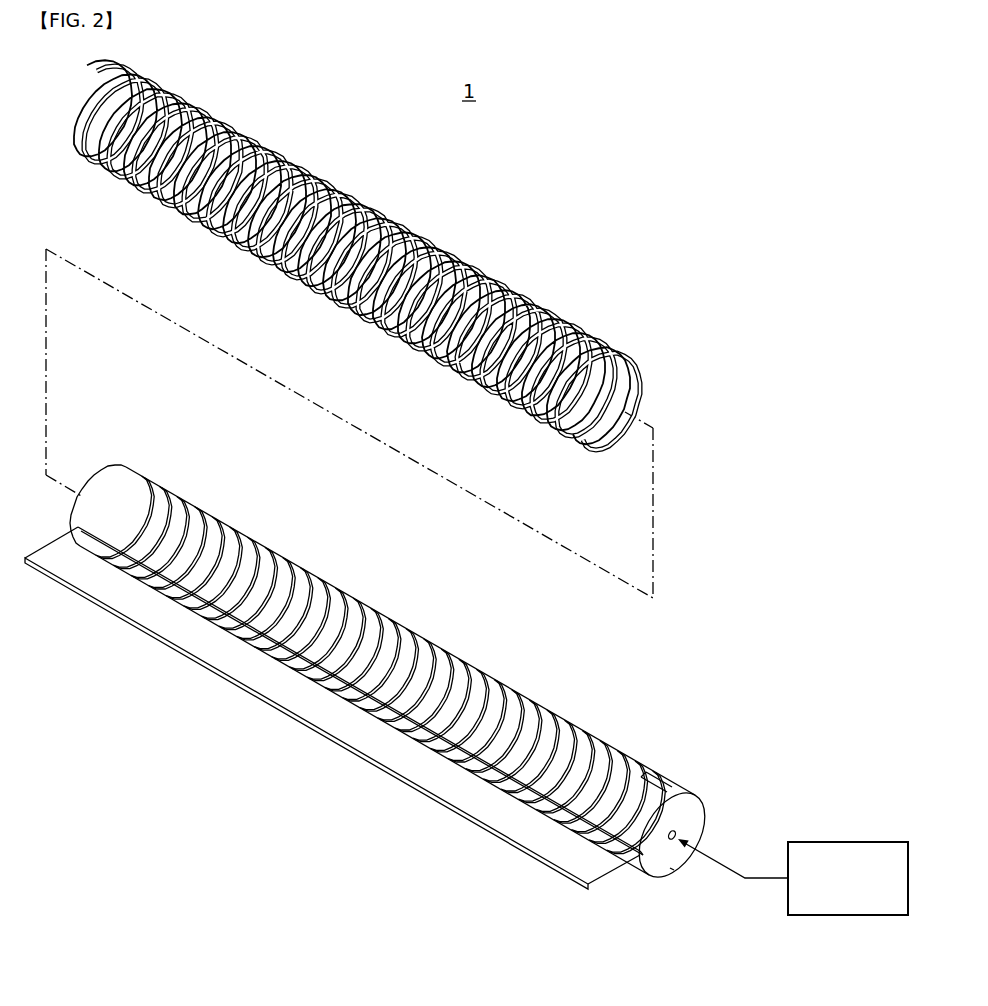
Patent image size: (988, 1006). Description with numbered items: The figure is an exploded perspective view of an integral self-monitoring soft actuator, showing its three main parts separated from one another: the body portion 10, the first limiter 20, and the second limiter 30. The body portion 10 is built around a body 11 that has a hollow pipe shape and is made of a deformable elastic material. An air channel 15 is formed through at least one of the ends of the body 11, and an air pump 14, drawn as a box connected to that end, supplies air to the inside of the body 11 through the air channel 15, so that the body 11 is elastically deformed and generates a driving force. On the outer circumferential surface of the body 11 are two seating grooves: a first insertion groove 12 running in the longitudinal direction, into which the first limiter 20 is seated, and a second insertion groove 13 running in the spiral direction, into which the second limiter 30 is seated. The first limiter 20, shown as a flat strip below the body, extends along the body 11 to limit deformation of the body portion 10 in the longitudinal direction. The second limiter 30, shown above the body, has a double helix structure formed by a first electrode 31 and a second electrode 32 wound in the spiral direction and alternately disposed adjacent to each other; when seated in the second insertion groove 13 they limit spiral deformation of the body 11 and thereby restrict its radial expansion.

The body portion 10 is at (411, 676).
The body 11 is at (673, 781).
The first insertion groove 12 is at (562, 747).
The second insertion groove 13 is at (620, 753).
The air pump 14 is at (850, 842).
The air channel 15 is at (677, 822).
The first limiter 20 is at (298, 718).
The second limiter 30 is at (402, 255).
The first electrode 31 is at (630, 366).
The second electrode 32 is at (607, 352).